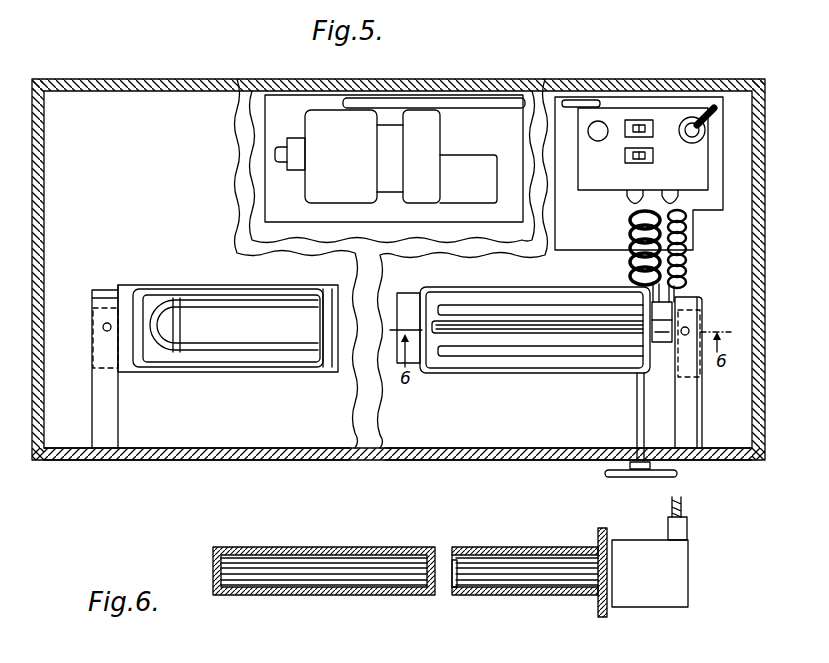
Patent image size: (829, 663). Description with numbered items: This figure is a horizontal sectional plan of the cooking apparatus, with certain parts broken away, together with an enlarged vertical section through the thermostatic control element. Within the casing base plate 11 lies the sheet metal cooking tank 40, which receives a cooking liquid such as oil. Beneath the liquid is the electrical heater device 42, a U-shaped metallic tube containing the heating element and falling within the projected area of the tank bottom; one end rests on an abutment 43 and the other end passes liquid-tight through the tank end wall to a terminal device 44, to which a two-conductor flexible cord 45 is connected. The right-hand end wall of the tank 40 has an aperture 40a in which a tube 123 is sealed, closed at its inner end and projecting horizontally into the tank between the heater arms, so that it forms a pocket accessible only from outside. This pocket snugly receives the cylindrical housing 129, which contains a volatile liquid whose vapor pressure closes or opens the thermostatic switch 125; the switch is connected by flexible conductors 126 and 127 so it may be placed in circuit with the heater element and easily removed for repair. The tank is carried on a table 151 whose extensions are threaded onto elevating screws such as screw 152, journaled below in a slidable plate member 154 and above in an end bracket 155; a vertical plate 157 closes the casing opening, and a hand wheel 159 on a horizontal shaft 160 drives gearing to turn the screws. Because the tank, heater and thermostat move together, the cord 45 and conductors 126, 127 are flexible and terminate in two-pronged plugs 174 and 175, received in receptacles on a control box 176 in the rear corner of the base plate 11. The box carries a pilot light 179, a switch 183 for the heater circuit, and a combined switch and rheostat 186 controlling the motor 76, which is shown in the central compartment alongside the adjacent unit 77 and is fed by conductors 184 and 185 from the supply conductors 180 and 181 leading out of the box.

In FIG. 5, the base plate 11 is at (398, 269).
In FIG. 5, the conductor 184 is at (455, 103).
In FIG. 5, the motor 76 is at (326, 156).
In FIG. 5, the pump 77 is at (435, 133).
In FIG. 5, the control box 176 is at (641, 104).
In FIG. 5, the pilot light 179 is at (598, 141).
In FIG. 5, the switch 183 is at (651, 121).
In FIG. 5, the switch 186 is at (653, 155).
In FIG. 5, the conductor 180 is at (703, 122).
In FIG. 5, the conductor 181 is at (736, 96).
In FIG. 5, the plug 174 is at (625, 201).
In FIG. 5, the plug 175 is at (678, 203).
In FIG. 5, the flexible cord 45 is at (630, 256).
In FIG. 5, the conductor 126 is at (685, 241).
In FIG. 6, the conductor 126 is at (668, 506).
In FIG. 5, the conductor 127 is at (685, 241).
In FIG. 6, the conductor 127 is at (688, 508).
In FIG. 5, the terminal device 44 is at (660, 307).
In FIG. 5, the switch 125 is at (663, 340).
In FIG. 6, the switch 125 is at (648, 598).
In FIG. 5, the cooking tank 40 is at (543, 377).
In FIG. 6, the cooking tank 40 is at (598, 607).
In FIG. 5, the tube 123 is at (510, 338).
In FIG. 6, the tube 123 is at (472, 545).
In FIG. 5, the table 151 is at (428, 378).
In FIG. 5, the horizontal shaft 160 is at (637, 397).
In FIG. 5, the hand wheel 159 is at (610, 470).
In FIG. 5, the end bracket 155 is at (693, 426).
In FIG. 5, the elevating screw 152 is at (703, 326).
In FIG. 5, the heater device 42 is at (259, 348).
In FIG. 5, the abutment 43 is at (181, 329).
In FIG. 5, the vertical plate 157 is at (197, 458).
In FIG. 5, the plate member 154 is at (257, 439).
In FIG. 6, the housing 129 is at (496, 578).
In FIG. 6, the aperture 40a is at (598, 543).
In FIG. 6, the conductor 185 is at (407, 653).